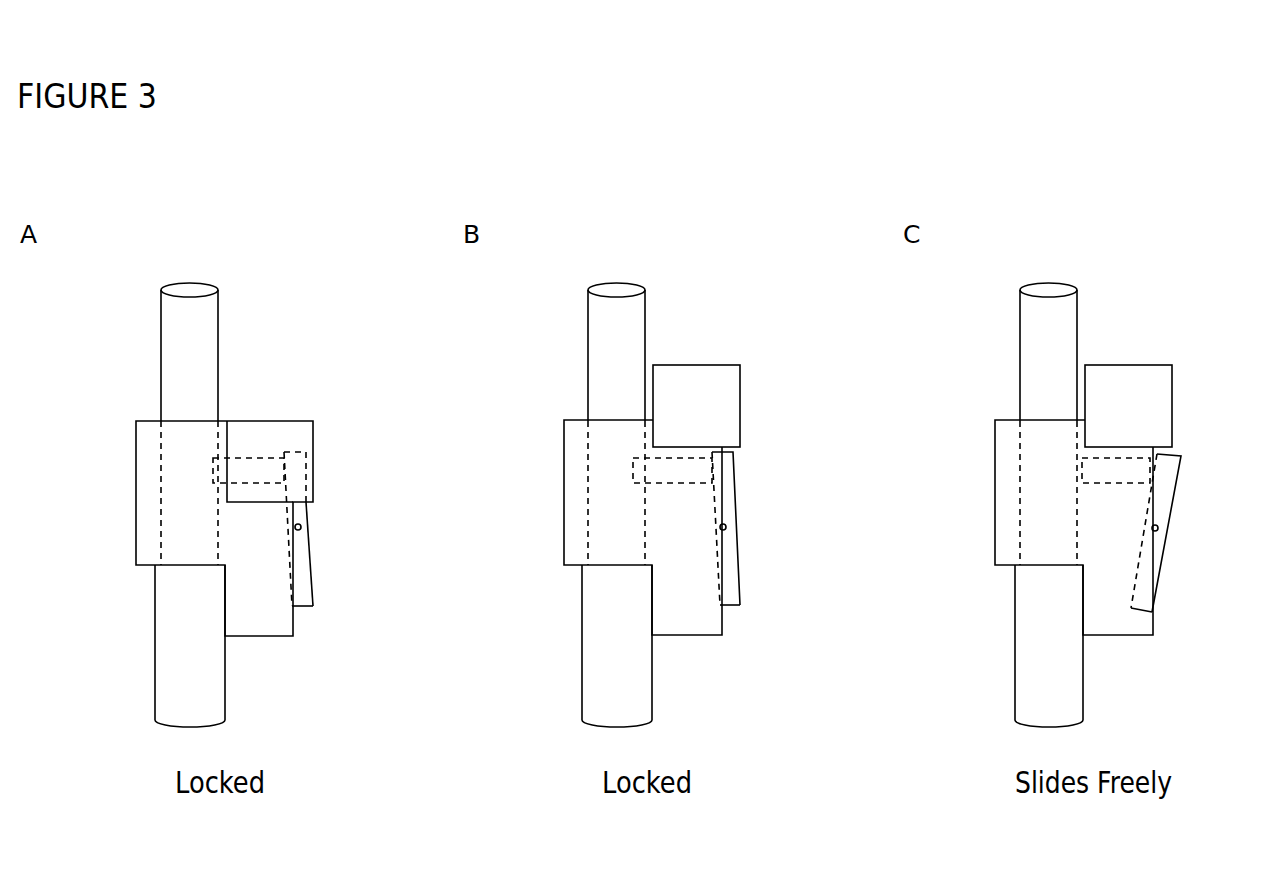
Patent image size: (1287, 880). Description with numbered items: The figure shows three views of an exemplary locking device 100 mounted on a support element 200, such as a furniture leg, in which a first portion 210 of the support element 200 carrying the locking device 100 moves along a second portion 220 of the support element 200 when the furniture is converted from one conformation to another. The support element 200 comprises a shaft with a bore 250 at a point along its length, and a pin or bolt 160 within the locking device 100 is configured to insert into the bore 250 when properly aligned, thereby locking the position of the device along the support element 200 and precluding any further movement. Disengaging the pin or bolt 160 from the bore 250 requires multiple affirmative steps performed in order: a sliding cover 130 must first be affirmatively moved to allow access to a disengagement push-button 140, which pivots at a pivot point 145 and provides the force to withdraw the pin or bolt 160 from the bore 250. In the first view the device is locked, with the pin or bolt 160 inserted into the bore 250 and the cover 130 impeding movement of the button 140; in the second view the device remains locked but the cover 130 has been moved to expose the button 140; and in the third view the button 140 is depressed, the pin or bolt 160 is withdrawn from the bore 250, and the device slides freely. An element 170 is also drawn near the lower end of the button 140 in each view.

The locking device 100 is at (705, 473).
The sliding cover 130 is at (303, 437).
The disengagement push-button 140 is at (302, 572).
The pivot point 145 is at (301, 527).
The pin or bolt 160 is at (252, 468).
The spring 170 is at (277, 618).
The support element 200 is at (601, 505).
The first portion of support element 210 is at (653, 646).
The second portion of support element 220 is at (203, 333).
The bore 250 is at (219, 469).